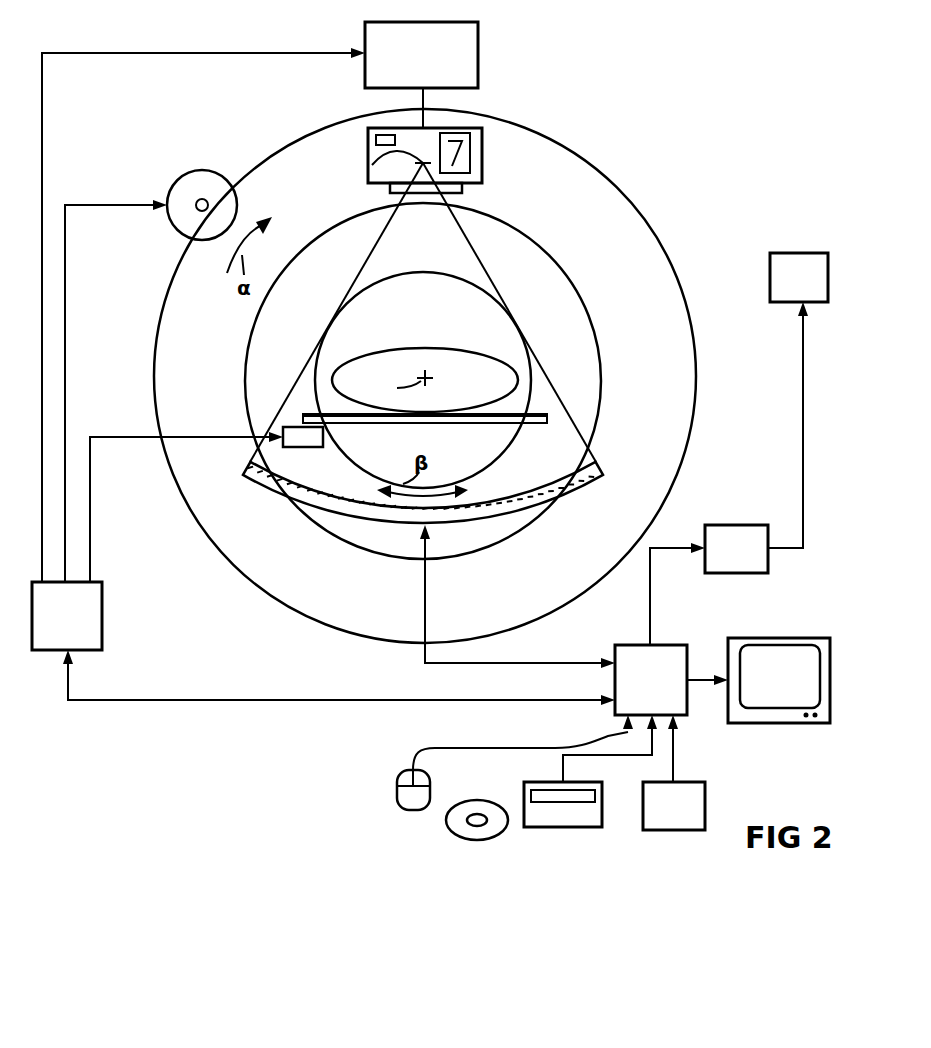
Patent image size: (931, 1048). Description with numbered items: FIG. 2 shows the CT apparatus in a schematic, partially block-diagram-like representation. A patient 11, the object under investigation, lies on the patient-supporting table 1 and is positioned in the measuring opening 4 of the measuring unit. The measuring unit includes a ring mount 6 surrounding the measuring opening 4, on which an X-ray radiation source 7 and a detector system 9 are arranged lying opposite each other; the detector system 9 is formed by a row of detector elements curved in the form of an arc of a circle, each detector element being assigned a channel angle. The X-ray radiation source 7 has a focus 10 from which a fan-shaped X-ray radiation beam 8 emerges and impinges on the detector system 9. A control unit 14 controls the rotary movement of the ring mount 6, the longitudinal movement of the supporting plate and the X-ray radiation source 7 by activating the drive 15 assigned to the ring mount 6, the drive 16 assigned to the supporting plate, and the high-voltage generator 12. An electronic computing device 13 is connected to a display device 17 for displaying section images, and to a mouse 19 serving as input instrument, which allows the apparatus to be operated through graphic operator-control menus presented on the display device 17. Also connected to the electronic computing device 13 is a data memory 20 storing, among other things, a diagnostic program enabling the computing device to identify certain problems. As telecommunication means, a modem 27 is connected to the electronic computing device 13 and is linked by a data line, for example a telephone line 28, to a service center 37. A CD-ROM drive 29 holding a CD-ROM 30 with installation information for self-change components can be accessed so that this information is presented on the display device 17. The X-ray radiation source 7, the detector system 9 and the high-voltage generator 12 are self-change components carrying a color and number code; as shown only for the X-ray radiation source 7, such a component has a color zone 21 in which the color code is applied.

The patient-supporting table 1 is at (440, 425).
The measuring opening 4 is at (437, 272).
The ring mount 6 is at (160, 323).
The X-ray radiation source 7 is at (482, 162).
The fan-shaped X-ray radiation beam 8 is at (297, 380).
The detector system 9 is at (520, 525).
The focus 10 is at (372, 165).
The patient 11 is at (424, 346).
The high-voltage generator 12 is at (478, 52).
The electronic computing device 13 is at (574, 620).
The control unit 14 is at (104, 622).
The drive 15 is at (200, 170).
The drive 16 is at (305, 447).
The display device 17 is at (768, 636).
The mouse 19 is at (405, 798).
The data memory 20 is at (674, 772).
The color zone 21 is at (380, 135).
The modem 27 is at (736, 549).
The telephone line 28 is at (458, 138).
The CD-ROM drive 29 is at (572, 812).
The CD-ROM 30 is at (470, 826).
The service center 37 is at (799, 277).